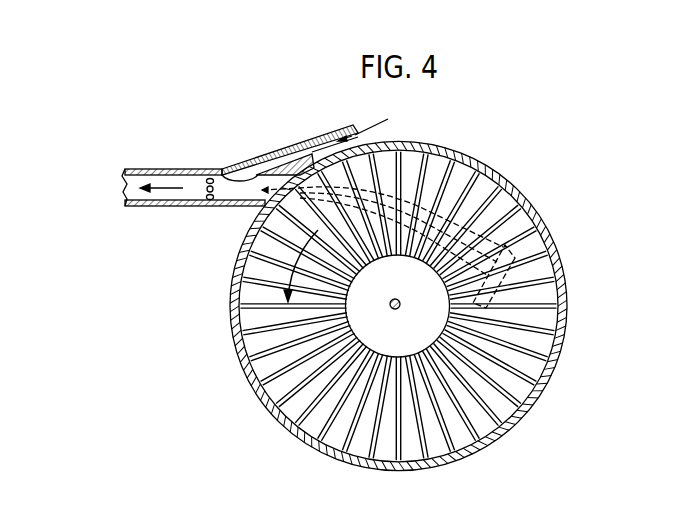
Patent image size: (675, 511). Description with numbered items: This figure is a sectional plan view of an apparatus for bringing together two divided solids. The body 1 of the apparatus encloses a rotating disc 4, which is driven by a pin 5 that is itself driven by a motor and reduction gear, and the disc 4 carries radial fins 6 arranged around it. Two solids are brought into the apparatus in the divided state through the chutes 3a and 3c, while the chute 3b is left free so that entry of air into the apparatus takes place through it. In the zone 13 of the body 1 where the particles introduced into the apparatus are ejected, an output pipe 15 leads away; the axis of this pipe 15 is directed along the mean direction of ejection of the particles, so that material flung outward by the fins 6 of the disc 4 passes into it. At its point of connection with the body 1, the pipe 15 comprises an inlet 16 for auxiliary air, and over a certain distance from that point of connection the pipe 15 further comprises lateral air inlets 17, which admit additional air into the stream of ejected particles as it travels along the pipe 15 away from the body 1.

The body 1 is at (530, 207).
The chute 3a is at (560, 317).
The chute 3b is at (563, 288).
The chute 3c is at (560, 255).
The rotating disc 4 is at (482, 200).
The pin 5 is at (392, 307).
The radial fins 6 is at (402, 181).
The zone 13 is at (302, 172).
The output pipe 15 is at (170, 182).
The inlet for auxiliary air 16 is at (298, 162).
The lateral air inlets 17 is at (208, 203).